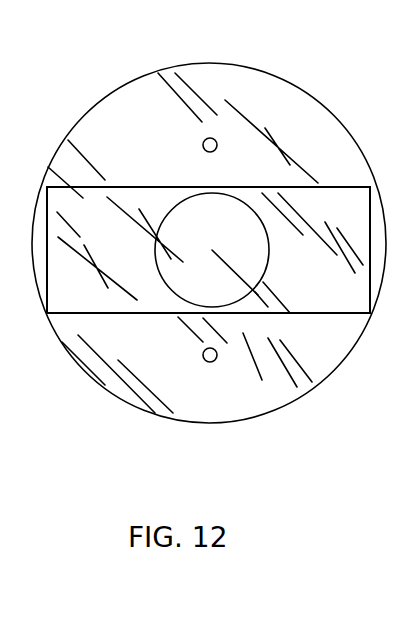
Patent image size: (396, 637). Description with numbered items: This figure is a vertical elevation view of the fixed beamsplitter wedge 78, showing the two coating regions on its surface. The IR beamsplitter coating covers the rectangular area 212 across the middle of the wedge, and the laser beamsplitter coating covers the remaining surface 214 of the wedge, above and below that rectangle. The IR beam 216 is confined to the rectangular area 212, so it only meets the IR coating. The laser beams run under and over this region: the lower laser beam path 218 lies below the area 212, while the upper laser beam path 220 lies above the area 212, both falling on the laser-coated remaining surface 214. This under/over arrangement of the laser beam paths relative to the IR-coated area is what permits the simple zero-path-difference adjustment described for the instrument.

The fixed wedge 78 is at (366, 157).
The rectangular area 212 is at (348, 293).
The remaining surface 214 is at (250, 90).
The IR beam 216 is at (238, 198).
The lower laser beam path 218 is at (203, 356).
The upper laser beam path 220 is at (203, 148).